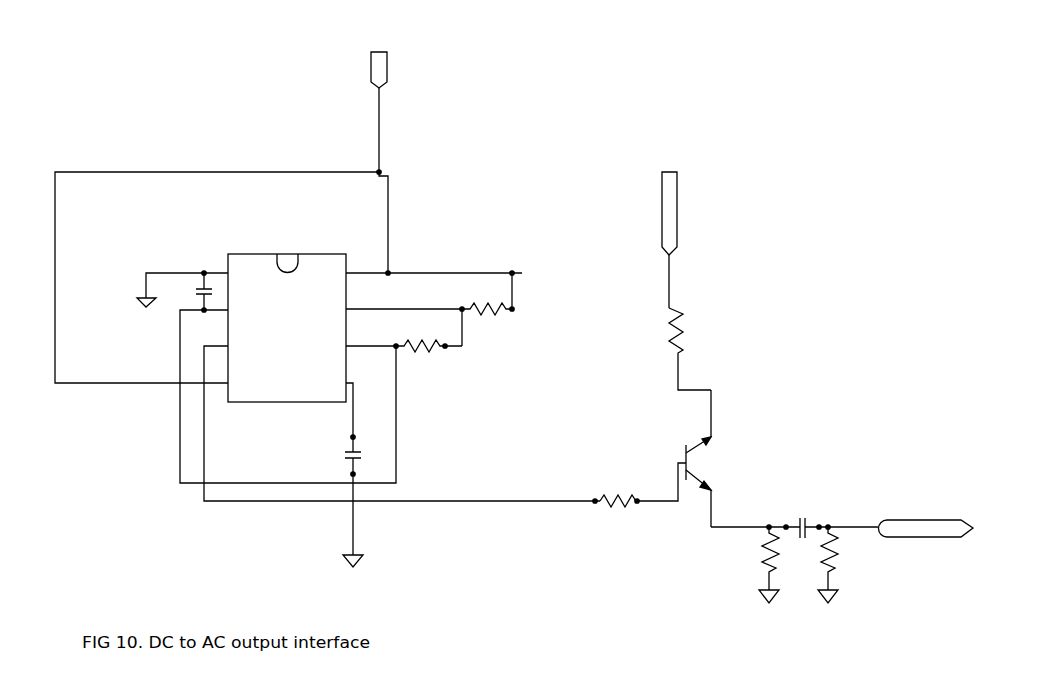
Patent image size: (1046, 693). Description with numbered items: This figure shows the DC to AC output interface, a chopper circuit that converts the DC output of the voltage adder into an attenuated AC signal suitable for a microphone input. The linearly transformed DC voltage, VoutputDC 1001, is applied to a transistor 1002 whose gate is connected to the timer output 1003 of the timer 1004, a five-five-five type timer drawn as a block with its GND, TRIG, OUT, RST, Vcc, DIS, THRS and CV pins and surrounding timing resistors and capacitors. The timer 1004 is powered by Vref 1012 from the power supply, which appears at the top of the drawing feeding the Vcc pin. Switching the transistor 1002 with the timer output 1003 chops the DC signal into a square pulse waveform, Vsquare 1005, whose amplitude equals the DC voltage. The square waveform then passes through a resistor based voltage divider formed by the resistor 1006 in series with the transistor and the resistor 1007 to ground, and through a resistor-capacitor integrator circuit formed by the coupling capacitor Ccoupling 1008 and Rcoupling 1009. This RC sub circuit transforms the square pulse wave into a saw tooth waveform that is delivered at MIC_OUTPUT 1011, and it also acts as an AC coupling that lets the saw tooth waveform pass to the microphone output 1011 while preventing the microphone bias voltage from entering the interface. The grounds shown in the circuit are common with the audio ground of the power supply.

The VoutputDC 1001 is at (678, 230).
The transistor 1002 is at (710, 463).
The timer output 1003 is at (547, 500).
The timer 1004 is at (287, 247).
The Vsquare 1005 is at (641, 500).
The resistor 1006 is at (693, 337).
The resistor 1007 is at (760, 518).
The coupling capacitor Ccoupling 1008 is at (793, 518).
The Rcoupling 1009 is at (828, 517).
The MIC_OUTPUT 1011 is at (910, 520).
The Vref 1012 is at (395, 63).